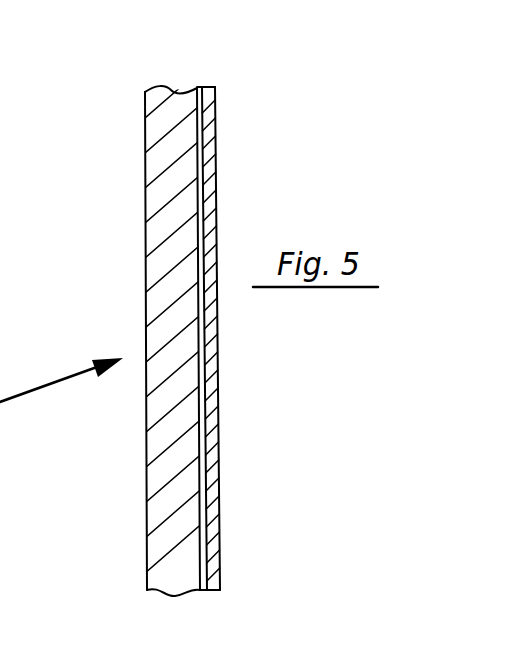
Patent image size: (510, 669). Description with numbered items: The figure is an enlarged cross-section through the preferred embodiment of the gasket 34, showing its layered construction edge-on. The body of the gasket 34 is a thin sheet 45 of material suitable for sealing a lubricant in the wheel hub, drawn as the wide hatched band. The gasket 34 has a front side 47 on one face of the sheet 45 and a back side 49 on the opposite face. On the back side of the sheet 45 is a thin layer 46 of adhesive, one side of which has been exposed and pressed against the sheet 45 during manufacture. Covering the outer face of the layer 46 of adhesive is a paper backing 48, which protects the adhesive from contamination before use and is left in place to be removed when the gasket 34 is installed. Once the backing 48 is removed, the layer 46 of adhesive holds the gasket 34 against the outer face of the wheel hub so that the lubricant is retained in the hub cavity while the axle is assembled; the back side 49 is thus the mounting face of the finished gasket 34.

The gasket 34 is at (266, 190).
The thin sheet 45 is at (169, 150).
The layer of adhesive 46 is at (199, 88).
The front side 47 is at (128, 249).
The paper backing 48 is at (212, 143).
The back side 49 is at (232, 341).